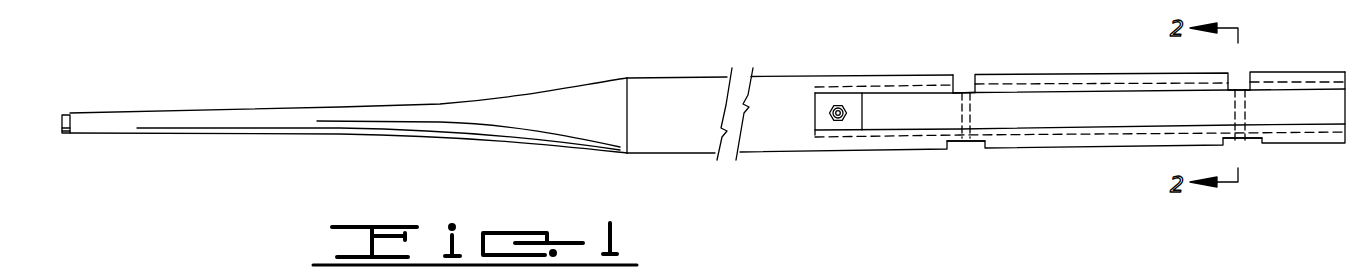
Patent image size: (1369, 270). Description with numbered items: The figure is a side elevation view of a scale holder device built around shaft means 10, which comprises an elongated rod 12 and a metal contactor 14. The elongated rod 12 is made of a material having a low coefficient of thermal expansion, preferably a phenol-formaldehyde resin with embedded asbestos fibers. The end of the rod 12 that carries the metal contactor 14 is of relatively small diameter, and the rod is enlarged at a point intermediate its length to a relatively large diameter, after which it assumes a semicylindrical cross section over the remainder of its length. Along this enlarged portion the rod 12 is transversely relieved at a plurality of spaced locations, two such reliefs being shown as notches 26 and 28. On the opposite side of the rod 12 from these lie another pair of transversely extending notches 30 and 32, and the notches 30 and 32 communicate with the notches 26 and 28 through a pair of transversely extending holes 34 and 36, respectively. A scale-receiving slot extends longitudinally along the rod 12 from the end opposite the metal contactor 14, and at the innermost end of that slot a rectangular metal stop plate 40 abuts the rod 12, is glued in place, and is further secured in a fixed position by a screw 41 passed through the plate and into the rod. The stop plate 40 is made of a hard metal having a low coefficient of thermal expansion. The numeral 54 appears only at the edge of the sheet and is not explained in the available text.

The shaft means 10 is at (680, 78).
The elongated rod 12 is at (417, 122).
The metal contactor 14 is at (72, 112).
The notch 26 is at (963, 78).
The notch 28 is at (1238, 80).
The notch 30 is at (972, 148).
The notch 32 is at (1256, 142).
The transversely extending hole 34 is at (978, 112).
The transversely extending hole 36 is at (1243, 115).
The stop plate 40 is at (827, 125).
The screw 41 is at (836, 104).
The element 54 is at (1145, 265).